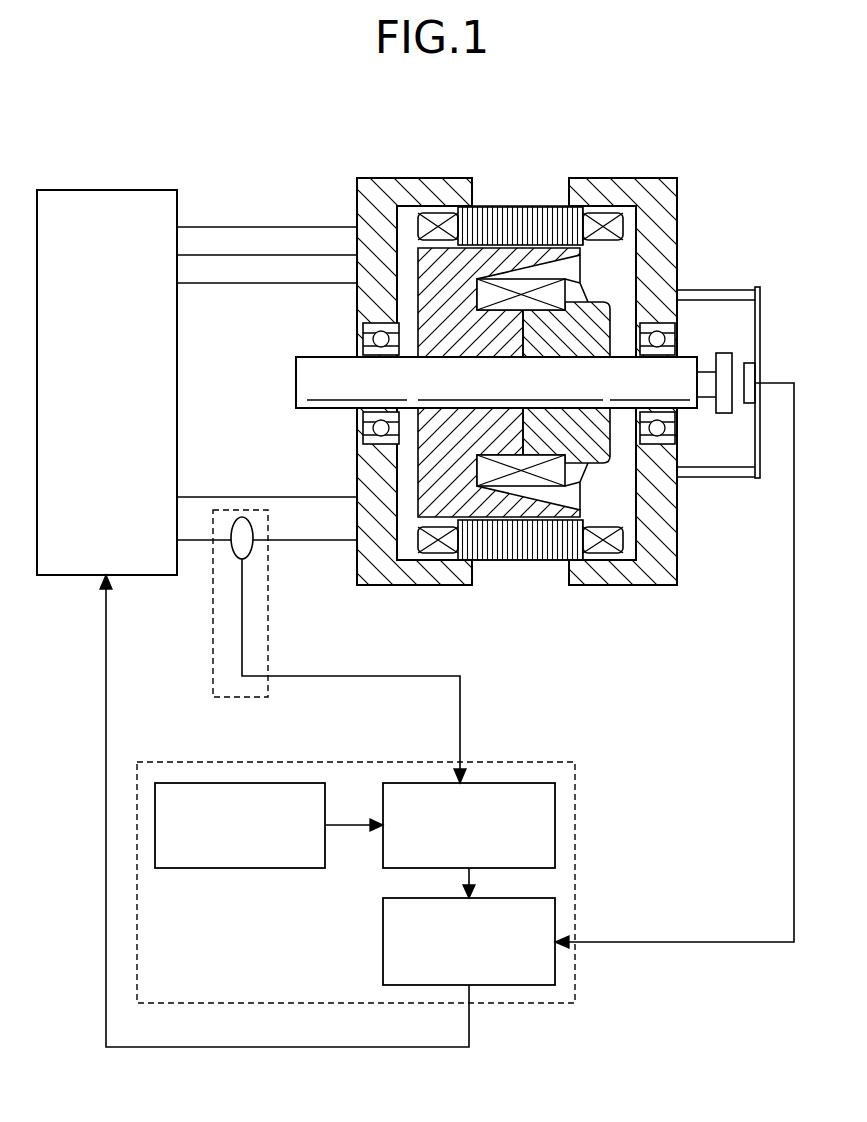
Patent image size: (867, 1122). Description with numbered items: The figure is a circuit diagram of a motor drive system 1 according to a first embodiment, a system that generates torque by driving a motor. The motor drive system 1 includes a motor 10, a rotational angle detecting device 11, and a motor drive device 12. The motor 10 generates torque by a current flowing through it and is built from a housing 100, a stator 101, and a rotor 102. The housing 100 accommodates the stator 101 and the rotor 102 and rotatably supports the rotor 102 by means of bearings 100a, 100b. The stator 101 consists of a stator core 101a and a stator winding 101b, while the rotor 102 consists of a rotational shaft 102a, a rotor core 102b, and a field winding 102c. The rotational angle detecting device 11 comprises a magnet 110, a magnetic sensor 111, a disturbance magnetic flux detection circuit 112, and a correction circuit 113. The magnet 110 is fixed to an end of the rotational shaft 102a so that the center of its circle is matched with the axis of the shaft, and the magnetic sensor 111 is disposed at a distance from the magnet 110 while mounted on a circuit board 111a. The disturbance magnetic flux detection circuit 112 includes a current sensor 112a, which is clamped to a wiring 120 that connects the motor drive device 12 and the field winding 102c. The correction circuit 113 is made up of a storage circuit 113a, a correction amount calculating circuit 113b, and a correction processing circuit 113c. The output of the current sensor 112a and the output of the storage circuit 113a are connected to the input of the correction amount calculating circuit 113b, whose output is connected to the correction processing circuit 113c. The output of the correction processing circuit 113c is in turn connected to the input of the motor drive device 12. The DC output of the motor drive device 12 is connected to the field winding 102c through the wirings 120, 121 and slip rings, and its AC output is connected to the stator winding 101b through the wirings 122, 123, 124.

The motor drive system 1 is at (697, 103).
The motor 10 is at (450, 178).
The rotational angle detecting device 11 is at (762, 312).
The motor drive device 12 is at (108, 190).
The housing 100 is at (560, 585).
The bearing 100a is at (372, 332).
The bearing 100b is at (672, 330).
The stator 101 is at (553, 206).
The stator core 101a is at (497, 220).
The stator winding 101b is at (438, 222).
The rotor 102 is at (330, 410).
The rotational shaft 102a is at (318, 387).
The rotor core 102b is at (443, 277).
The field winding 102c is at (555, 297).
The magnet 110 is at (734, 360).
The magnetic sensor 111 is at (750, 375).
The circuit board 111a is at (757, 480).
The disturbance magnetic flux detection circuit 112 is at (213, 612).
The current sensor 112a is at (250, 560).
The correction circuit 113 is at (383, 760).
The storage circuit 113a is at (228, 869).
The correction amount calculating circuit 113b is at (383, 852).
The correction processing circuit 113c is at (383, 930).
The wiring 120 is at (200, 539).
The wiring 121 is at (253, 496).
The wiring 122 is at (197, 282).
The wiring 123 is at (222, 254).
The wiring 124 is at (253, 226).